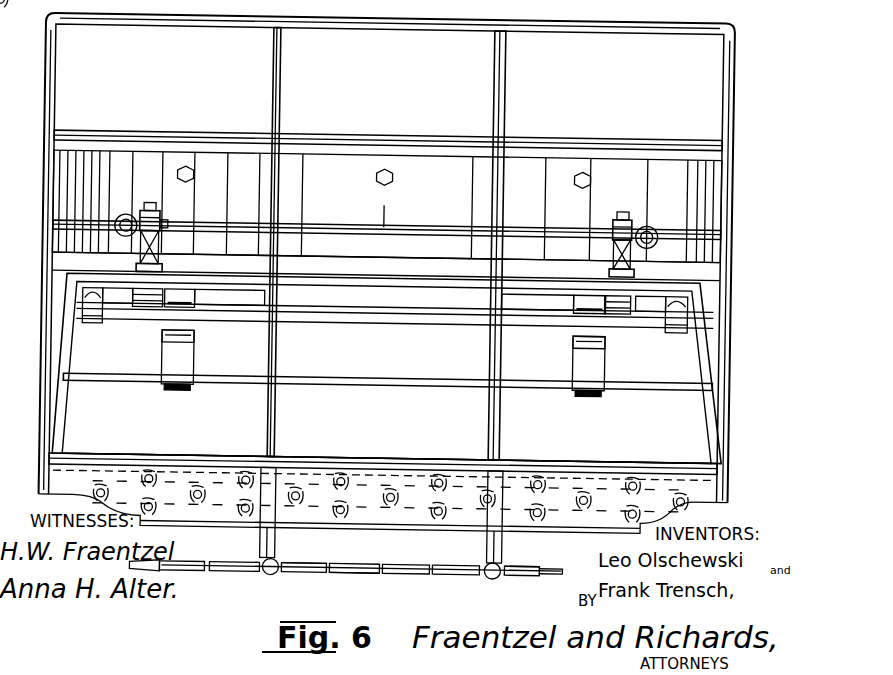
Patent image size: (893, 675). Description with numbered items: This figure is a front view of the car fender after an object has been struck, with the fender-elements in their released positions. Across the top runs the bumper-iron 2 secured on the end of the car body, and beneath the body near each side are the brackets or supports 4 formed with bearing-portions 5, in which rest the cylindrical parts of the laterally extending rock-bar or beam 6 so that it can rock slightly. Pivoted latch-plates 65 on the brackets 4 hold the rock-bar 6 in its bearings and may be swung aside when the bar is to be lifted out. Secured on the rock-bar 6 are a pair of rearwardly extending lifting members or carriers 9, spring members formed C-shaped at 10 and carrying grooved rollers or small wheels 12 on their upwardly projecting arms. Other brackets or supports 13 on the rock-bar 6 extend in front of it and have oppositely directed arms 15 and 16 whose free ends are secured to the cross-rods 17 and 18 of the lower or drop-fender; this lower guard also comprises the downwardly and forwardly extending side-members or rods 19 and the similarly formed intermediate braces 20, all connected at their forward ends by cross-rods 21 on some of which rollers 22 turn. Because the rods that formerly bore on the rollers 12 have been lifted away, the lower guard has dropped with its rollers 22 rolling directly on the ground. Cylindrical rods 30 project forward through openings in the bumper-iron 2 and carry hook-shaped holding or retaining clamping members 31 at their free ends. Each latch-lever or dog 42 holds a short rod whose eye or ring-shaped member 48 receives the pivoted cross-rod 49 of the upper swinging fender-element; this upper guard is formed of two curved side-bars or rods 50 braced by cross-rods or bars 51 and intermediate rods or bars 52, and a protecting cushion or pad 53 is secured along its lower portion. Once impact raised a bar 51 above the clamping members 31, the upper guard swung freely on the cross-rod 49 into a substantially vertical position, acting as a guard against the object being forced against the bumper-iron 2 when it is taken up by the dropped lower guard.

The bumper-iron 2 is at (348, 163).
The brackets or supports 4 is at (94, 259).
The bearing-portions 5 is at (103, 322).
The rock-bar or beam 6 is at (130, 321).
The lifting members or carriers 9 is at (155, 305).
The C-shaped spring portion 10 is at (140, 267).
The grooved rollers or small wheels 12 is at (166, 250).
The brackets or supports 13 is at (202, 330).
The arm 15 is at (209, 287).
The arm 16 is at (201, 358).
The cross-rod or bar 17 is at (242, 282).
The cross-rod or bar 18 is at (235, 381).
The side-members or rods 19 is at (66, 397).
The braces 20 is at (495, 351).
The cross-rods 21 is at (339, 568).
The rollers 22 is at (311, 568).
The cylindrical rods 30 is at (113, 231).
The hook-shaped holding or retaining clamping members 31 is at (130, 213).
The latch-lever or dog 42 is at (154, 200).
The eye or ring-shaped member 48 is at (165, 216).
The cross-rod 49 is at (232, 214).
The side-bars or rods 50 is at (48, 65).
The cross-rods or bars 51 is at (223, 128).
The intermediate rods or bars 52 is at (285, 70).
The protecting cushion or pad 53 is at (369, 473).
The latch-plates 65 is at (74, 288).